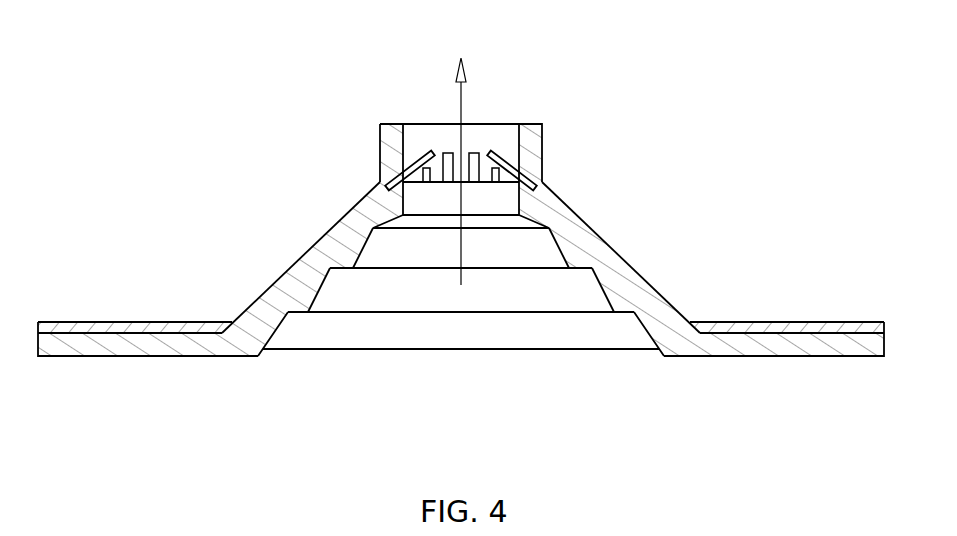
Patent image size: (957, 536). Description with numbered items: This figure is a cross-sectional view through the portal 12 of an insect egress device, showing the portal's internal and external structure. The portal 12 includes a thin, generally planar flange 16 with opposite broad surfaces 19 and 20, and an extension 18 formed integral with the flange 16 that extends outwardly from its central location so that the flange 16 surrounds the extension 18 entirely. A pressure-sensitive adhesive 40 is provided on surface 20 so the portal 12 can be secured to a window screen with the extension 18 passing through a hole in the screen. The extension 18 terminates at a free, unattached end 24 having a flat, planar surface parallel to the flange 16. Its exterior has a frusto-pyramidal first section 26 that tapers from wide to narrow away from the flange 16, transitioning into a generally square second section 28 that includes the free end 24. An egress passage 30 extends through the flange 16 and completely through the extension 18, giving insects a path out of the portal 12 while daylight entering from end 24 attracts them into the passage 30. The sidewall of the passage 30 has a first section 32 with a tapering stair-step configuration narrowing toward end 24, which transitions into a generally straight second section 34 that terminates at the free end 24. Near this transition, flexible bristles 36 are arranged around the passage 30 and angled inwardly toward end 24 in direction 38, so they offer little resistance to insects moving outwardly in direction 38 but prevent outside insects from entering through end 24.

The portal 12 is at (181, 138).
The flange 16 is at (125, 348).
The extension 18 is at (638, 250).
The broad surface 19 is at (745, 358).
The broad surface 20 is at (789, 332).
The free end 24 is at (528, 123).
The first section 26 is at (278, 283).
The second section 28 is at (380, 143).
The egress passage 30 is at (411, 348).
The first section of the sidewall 32 is at (317, 292).
The second section of the sidewall 34 is at (411, 153).
The bristles 36 is at (510, 152).
The direction 38 is at (464, 262).
The pressure-sensitive adhesive 40 is at (95, 323).